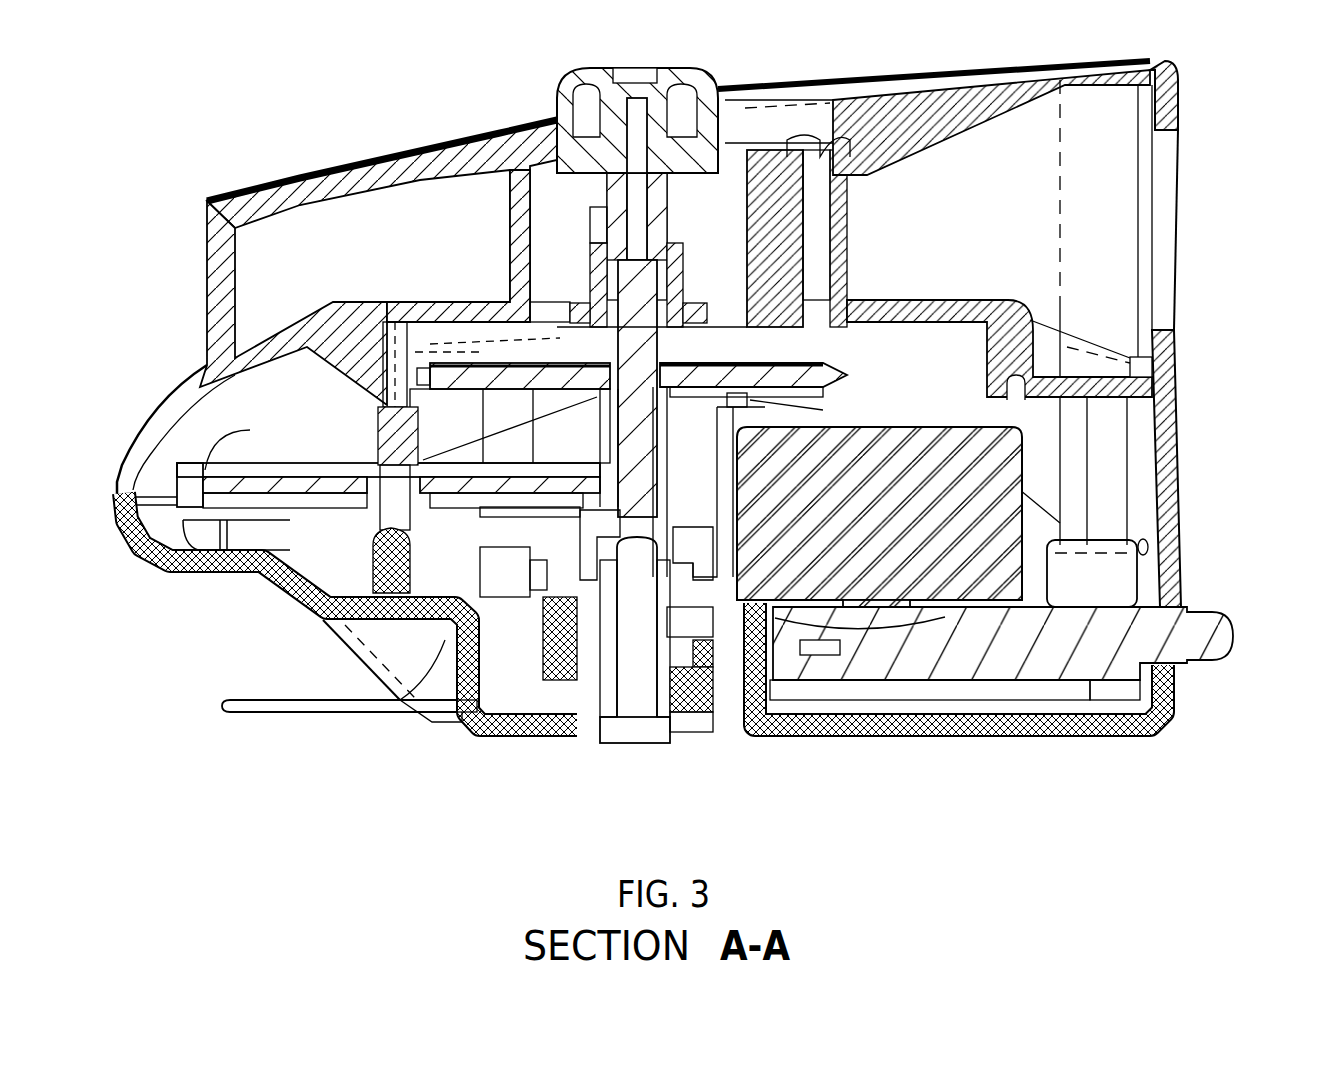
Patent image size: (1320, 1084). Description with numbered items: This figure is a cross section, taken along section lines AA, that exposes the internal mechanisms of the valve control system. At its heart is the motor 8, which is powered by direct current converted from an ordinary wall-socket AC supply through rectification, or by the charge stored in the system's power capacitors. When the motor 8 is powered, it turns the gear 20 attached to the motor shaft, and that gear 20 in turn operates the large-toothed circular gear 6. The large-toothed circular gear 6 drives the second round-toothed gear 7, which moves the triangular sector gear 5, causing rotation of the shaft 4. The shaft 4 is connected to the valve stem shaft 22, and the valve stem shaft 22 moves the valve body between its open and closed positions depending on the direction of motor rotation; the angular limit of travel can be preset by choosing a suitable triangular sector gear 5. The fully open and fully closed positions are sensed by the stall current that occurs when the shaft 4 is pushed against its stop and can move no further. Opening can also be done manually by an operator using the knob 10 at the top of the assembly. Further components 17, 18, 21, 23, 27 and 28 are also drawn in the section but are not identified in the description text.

The shaft 4 is at (668, 520).
The triangular sector gear 5 is at (505, 540).
The large-toothed circular gear 6 is at (720, 335).
The second round-toothed gear 7 is at (285, 470).
The motor 8 is at (885, 560).
The knob 10 is at (712, 70).
The post 17 is at (395, 457).
The support plate 18 is at (885, 300).
The gear 20 is at (930, 360).
The seal 21 is at (1170, 710).
The valve stem shaft 22 is at (680, 737).
The button 23 is at (1137, 567).
The side wall 27 is at (1130, 442).
The base plate 28 is at (930, 645).